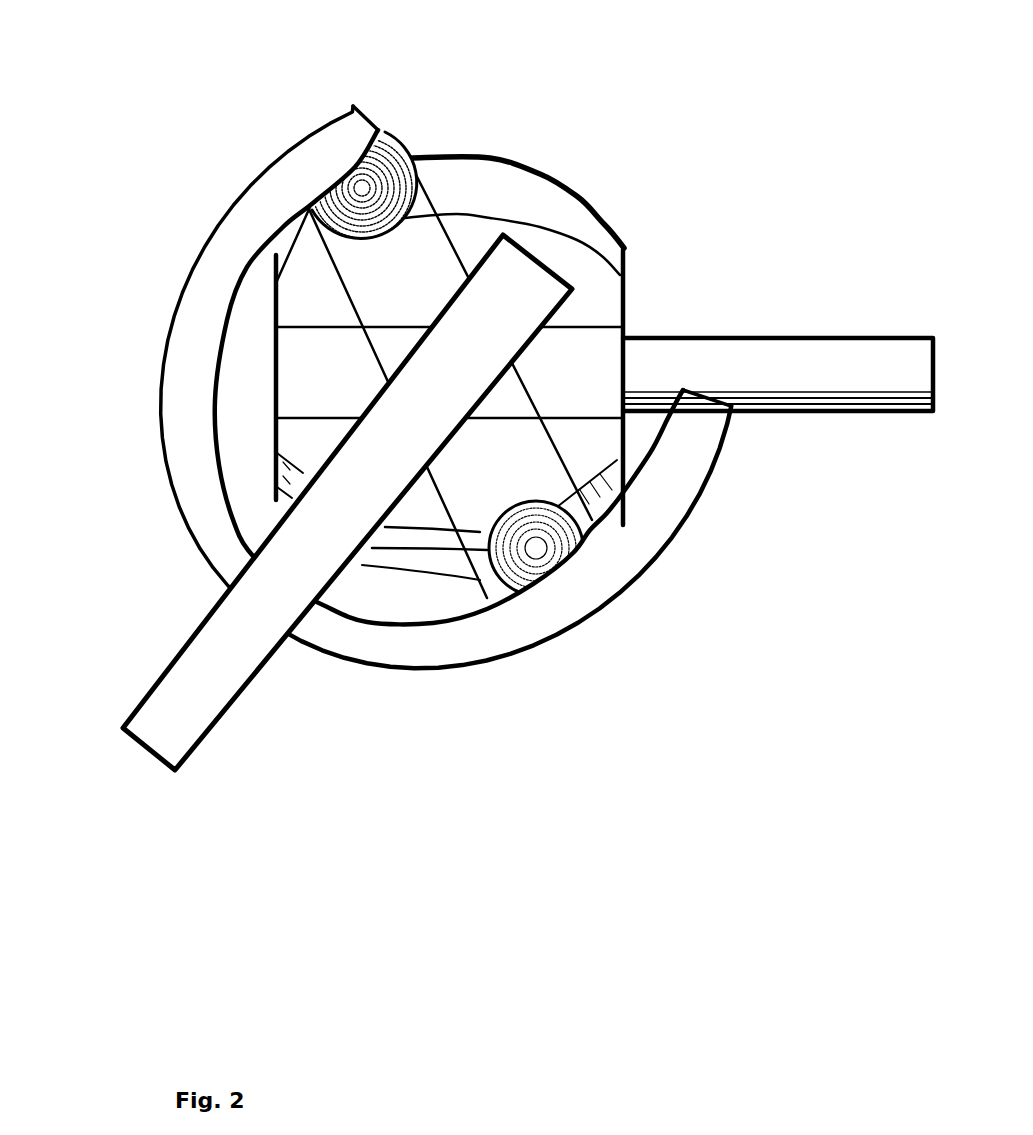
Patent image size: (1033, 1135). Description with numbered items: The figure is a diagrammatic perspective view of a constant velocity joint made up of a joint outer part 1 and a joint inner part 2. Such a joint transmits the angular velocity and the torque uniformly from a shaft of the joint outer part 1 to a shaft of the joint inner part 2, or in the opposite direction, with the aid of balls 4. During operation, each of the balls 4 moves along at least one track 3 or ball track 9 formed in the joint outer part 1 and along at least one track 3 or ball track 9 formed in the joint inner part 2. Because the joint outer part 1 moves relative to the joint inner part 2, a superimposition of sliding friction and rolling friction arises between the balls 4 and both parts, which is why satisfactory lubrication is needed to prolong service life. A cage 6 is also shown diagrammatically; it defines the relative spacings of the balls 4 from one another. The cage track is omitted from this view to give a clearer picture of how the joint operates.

The joint outer part 1 is at (175, 588).
The joint inner part 2 is at (692, 269).
The track 3 is at (648, 433).
The balls 4 is at (393, 118).
The cage 6 is at (447, 237).
The ball track 9 is at (542, 203).